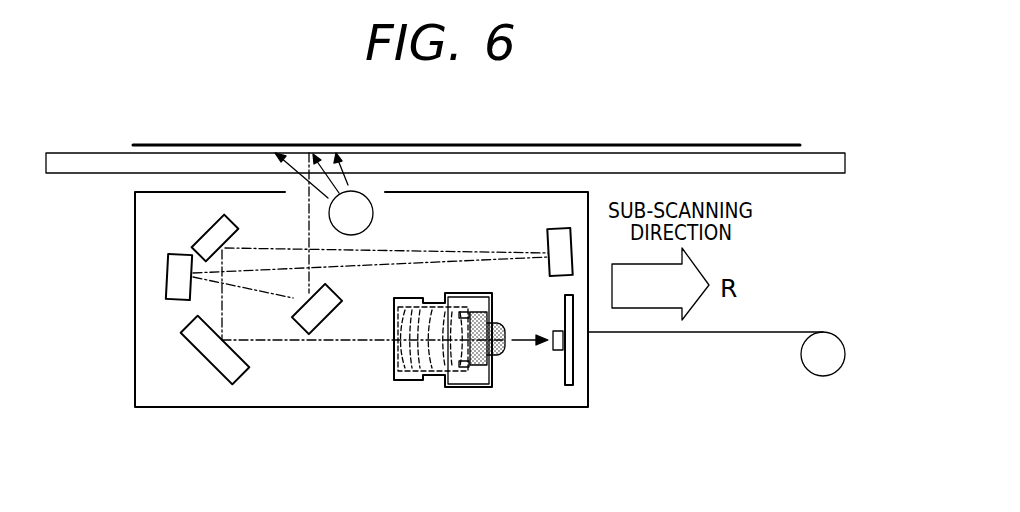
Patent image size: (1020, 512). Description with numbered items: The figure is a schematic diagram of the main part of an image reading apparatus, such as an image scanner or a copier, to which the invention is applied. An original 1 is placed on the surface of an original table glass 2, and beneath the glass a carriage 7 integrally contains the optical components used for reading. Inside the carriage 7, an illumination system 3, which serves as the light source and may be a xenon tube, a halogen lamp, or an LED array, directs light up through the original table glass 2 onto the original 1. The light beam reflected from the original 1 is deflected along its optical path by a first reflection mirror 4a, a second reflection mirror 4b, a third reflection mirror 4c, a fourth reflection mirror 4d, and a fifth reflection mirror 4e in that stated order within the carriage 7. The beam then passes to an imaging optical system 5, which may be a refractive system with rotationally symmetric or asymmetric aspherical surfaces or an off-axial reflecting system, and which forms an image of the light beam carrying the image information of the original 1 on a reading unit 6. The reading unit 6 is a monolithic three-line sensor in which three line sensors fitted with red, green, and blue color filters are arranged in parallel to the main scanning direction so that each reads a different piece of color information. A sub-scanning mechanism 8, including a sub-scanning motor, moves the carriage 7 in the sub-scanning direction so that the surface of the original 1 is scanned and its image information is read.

The original 1 is at (263, 145).
The original table glass 2 is at (67, 152).
The illumination system 3 is at (373, 214).
The first reflection mirror 4a is at (318, 326).
The second reflection mirror 4b is at (166, 278).
The third reflection mirror 4c is at (548, 236).
The fourth reflection mirror 4d is at (190, 235).
The fifth reflection mirror 4e is at (197, 347).
The imaging optical system 5 is at (403, 370).
The reading unit 6 is at (558, 352).
The carriage 7 is at (552, 192).
The sub-scanning mechanism 8 is at (813, 377).